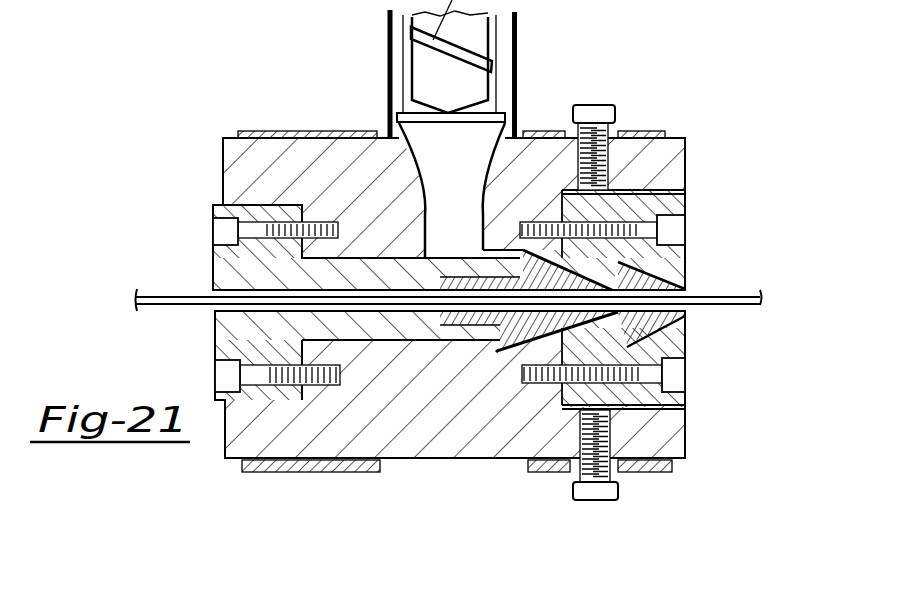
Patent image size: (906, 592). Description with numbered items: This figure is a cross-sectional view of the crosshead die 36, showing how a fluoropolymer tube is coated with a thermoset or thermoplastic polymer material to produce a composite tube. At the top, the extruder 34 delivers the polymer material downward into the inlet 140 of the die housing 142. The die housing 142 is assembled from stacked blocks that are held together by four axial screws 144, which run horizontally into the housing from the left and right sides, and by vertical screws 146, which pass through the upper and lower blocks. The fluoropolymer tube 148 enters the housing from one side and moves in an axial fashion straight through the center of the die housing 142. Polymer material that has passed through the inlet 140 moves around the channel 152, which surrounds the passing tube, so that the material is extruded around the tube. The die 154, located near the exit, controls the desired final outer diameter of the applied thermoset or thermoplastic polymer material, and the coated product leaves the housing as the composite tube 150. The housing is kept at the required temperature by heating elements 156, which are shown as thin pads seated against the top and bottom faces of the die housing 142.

The extruder 34 is at (520, 68).
The crosshead die 36 is at (203, 163).
The inlet 140 is at (472, 165).
The die housing 142 is at (687, 168).
The axial screws 144 is at (222, 237).
The vertical screws 146 is at (607, 105).
The fluoropolymer tube 148 is at (165, 296).
The composite tube 150 is at (710, 296).
The channel 152 is at (650, 258).
The die 154 is at (685, 346).
The heating elements 156 is at (318, 130).